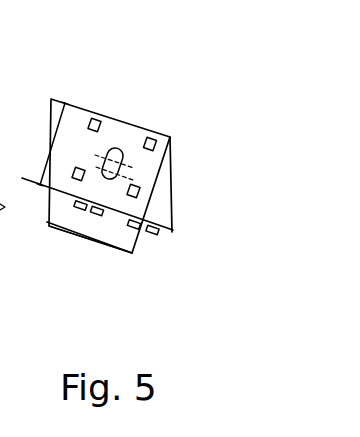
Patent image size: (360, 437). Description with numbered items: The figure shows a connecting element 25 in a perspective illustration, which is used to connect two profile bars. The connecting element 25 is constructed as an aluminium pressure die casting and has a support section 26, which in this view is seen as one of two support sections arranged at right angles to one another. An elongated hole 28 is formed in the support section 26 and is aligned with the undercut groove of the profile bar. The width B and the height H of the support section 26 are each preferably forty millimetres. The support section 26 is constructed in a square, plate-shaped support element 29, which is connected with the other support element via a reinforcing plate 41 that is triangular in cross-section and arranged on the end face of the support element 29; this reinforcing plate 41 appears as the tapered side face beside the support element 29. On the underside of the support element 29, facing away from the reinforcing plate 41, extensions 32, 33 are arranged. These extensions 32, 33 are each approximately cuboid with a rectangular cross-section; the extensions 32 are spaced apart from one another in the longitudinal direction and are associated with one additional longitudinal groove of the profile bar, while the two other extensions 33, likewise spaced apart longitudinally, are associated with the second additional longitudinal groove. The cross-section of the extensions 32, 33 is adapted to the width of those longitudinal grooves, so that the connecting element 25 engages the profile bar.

The connecting element 25 is at (92, 247).
The support section 26 is at (117, 153).
The elongated hole 28 is at (115, 150).
The support element 29 is at (126, 133).
The extensions 32 is at (97, 218).
The extensions 33 is at (134, 232).
The reinforcing plate 41 is at (165, 191).
The height H is at (50, 152).
The width B is at (105, 244).